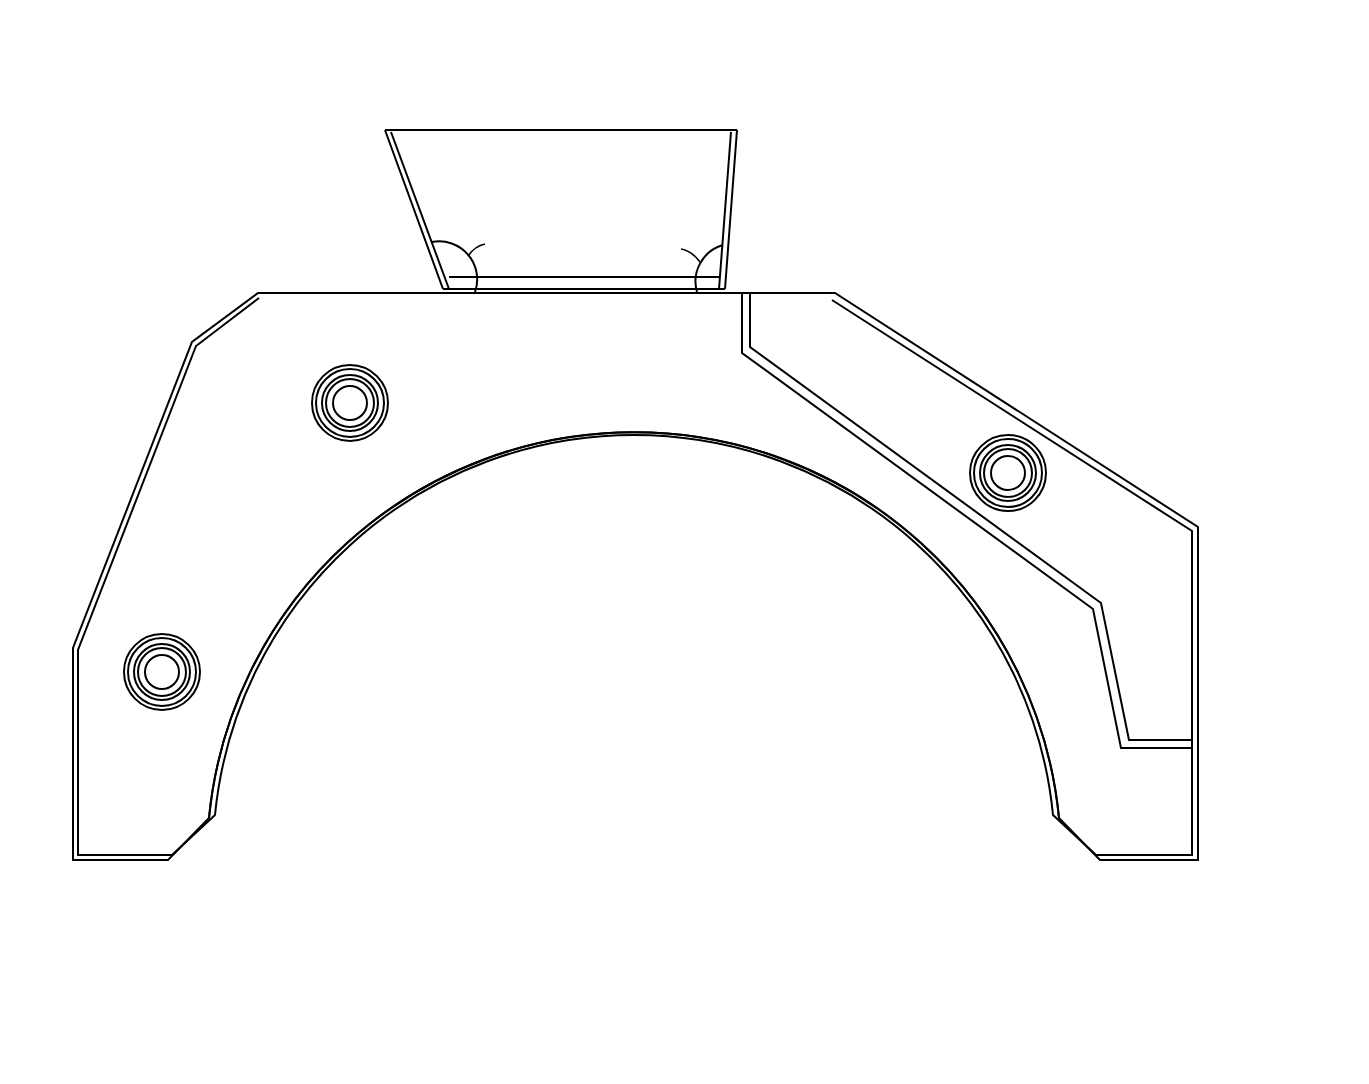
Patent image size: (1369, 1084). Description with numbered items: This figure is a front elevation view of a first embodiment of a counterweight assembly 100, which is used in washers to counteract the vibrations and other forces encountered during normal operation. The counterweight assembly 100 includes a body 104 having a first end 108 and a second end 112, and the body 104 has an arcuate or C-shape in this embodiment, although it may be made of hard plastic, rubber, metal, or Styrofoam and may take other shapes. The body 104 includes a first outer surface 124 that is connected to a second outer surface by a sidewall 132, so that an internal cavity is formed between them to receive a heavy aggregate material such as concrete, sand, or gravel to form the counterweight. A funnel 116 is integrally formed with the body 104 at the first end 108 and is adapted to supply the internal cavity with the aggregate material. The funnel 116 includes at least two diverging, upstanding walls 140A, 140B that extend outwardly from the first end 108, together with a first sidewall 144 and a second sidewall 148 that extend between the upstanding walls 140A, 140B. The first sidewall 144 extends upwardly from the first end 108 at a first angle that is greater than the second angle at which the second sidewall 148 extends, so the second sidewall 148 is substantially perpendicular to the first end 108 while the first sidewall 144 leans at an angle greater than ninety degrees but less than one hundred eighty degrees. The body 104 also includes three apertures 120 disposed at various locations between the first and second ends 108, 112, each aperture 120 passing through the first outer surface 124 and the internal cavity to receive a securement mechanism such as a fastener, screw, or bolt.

The counterweight assembly 100 is at (1120, 138).
The body 104 is at (1242, 644).
The first end 108 is at (287, 292).
The second end 112 is at (125, 865).
The funnel 116 is at (619, 116).
The aperture 120 is at (345, 400).
The first outer surface 124 is at (582, 367).
The sidewall 132 is at (1200, 807).
The diverging upstanding wall 140A is at (497, 150).
The diverging upstanding wall 140B is at (576, 209).
The first sidewall 144 is at (412, 207).
The second sidewall 148 is at (740, 204).